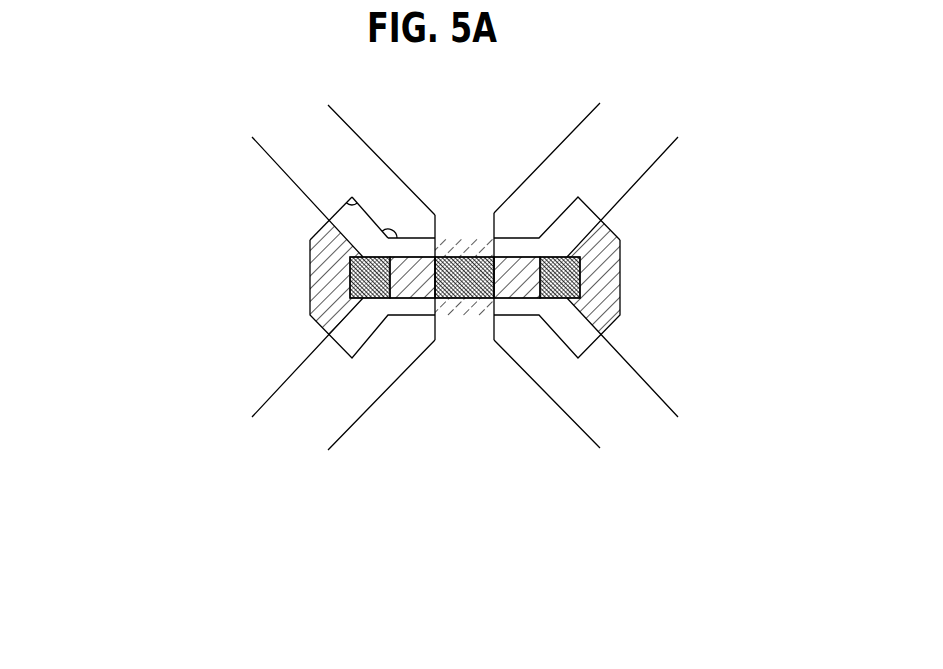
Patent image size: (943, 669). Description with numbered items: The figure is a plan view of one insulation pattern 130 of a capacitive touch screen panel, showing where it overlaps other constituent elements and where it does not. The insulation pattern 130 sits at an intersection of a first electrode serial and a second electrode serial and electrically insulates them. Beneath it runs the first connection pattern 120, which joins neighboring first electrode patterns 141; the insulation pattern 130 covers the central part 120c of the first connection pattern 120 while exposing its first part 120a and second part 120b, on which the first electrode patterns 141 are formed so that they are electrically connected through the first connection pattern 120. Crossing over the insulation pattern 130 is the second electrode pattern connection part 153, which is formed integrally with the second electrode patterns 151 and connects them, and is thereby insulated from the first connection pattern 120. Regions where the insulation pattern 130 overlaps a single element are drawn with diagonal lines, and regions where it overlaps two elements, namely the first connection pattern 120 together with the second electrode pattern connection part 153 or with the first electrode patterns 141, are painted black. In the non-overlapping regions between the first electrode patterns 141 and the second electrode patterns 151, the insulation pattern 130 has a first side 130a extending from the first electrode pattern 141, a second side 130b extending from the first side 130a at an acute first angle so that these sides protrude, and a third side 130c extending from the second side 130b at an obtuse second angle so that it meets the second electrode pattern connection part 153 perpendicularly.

The first connection pattern 120 is at (461, 407).
The first part of first connection pattern 120a is at (562, 288).
The second part of first connection pattern 120b is at (377, 288).
The central part of first connection pattern 120c is at (412, 288).
The insulation pattern 130 is at (400, 230).
The first side 130a is at (341, 209).
The second side 130b is at (373, 220).
The third side 130c is at (422, 237).
The first electrode pattern 141 is at (275, 293).
The second electrode pattern 151 is at (482, 134).
The second electrode pattern connection part 153 is at (482, 231).